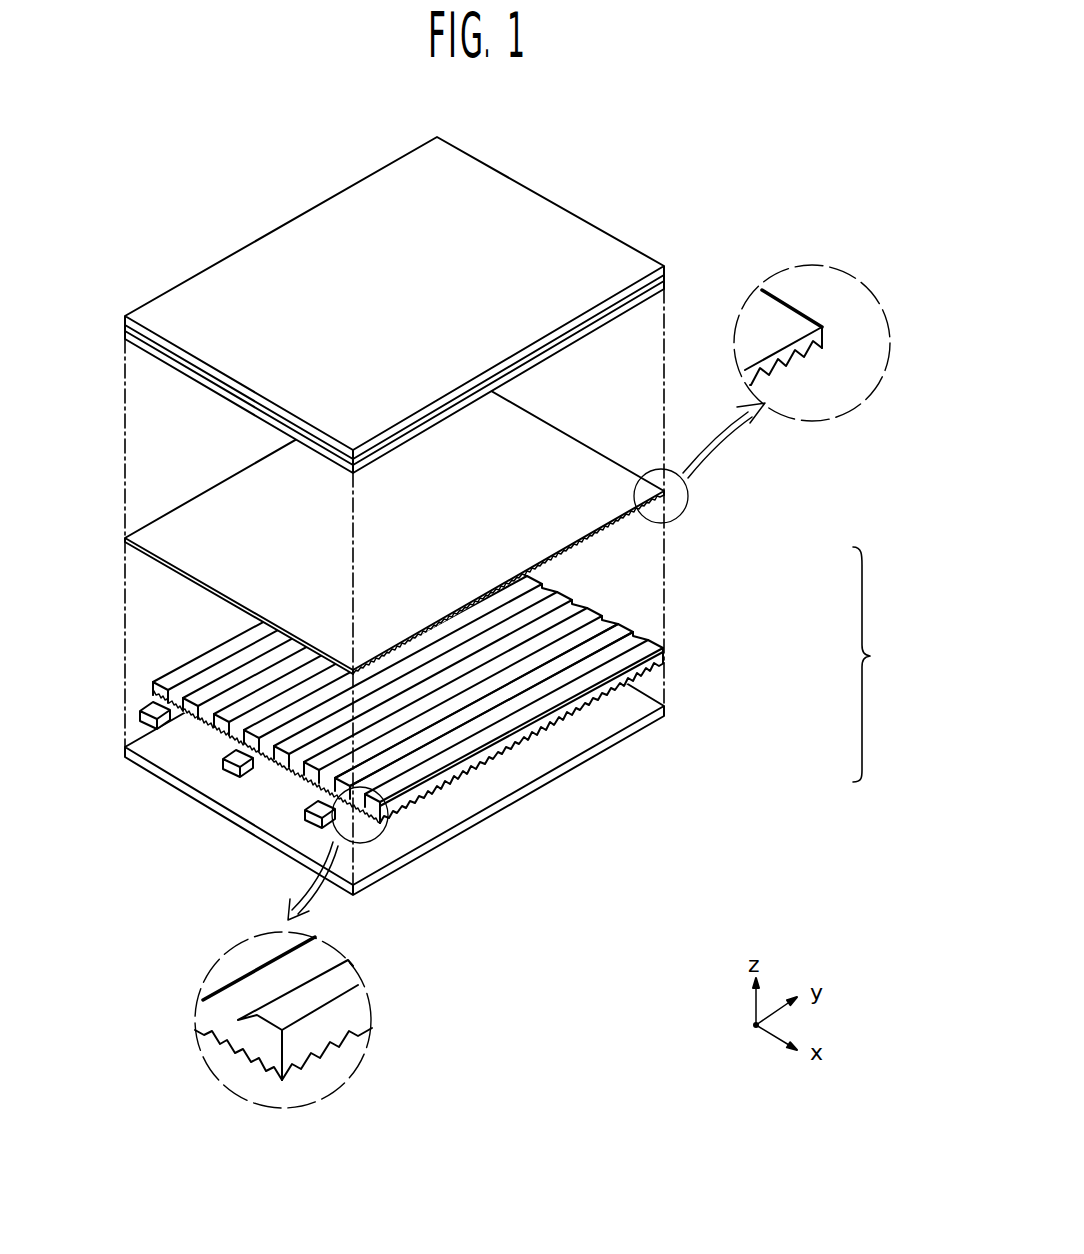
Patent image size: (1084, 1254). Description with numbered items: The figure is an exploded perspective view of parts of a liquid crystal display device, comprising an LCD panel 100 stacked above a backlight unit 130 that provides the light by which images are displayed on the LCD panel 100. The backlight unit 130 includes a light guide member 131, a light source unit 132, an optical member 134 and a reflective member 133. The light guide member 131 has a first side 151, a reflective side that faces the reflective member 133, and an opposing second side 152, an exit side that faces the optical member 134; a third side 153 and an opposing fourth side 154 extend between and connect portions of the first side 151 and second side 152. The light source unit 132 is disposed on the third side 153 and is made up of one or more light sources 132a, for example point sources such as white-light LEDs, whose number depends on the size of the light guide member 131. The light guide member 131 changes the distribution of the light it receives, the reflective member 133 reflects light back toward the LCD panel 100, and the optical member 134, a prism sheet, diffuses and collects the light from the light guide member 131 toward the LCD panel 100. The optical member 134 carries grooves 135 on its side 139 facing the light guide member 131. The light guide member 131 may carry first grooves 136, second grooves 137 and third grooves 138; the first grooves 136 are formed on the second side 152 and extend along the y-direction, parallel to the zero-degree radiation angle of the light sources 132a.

The LCD panel 100 is at (567, 236).
The backlight unit 130 is at (880, 664).
The light guide member 131 is at (660, 667).
The light source unit 132 is at (191, 737).
The light source 132a is at (150, 705).
The reflective member 133 is at (530, 793).
The optical member 134 is at (565, 525).
The grooves 135 is at (792, 363).
The first grooves 136 is at (227, 982).
The second grooves 137 is at (343, 1038).
The third grooves 138 is at (250, 1057).
The side 139 is at (822, 360).
The first side 151 is at (448, 787).
The second side 152 is at (611, 612).
The third side 153 is at (293, 802).
The fourth side 154 is at (640, 627).